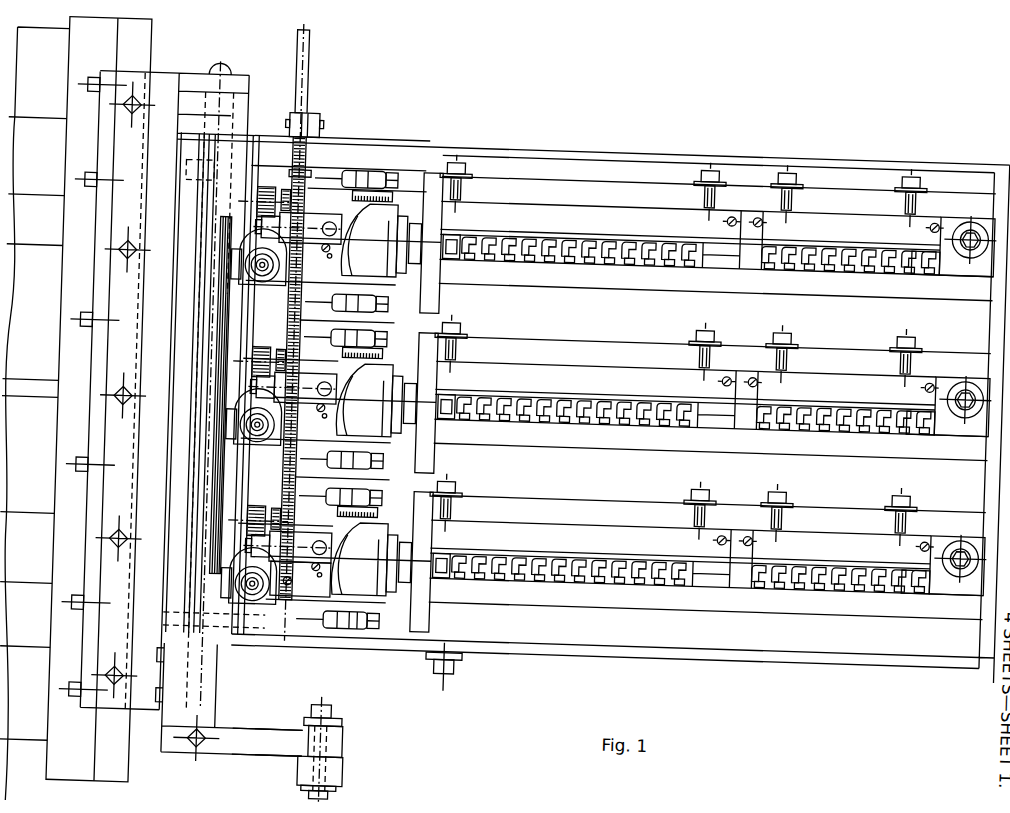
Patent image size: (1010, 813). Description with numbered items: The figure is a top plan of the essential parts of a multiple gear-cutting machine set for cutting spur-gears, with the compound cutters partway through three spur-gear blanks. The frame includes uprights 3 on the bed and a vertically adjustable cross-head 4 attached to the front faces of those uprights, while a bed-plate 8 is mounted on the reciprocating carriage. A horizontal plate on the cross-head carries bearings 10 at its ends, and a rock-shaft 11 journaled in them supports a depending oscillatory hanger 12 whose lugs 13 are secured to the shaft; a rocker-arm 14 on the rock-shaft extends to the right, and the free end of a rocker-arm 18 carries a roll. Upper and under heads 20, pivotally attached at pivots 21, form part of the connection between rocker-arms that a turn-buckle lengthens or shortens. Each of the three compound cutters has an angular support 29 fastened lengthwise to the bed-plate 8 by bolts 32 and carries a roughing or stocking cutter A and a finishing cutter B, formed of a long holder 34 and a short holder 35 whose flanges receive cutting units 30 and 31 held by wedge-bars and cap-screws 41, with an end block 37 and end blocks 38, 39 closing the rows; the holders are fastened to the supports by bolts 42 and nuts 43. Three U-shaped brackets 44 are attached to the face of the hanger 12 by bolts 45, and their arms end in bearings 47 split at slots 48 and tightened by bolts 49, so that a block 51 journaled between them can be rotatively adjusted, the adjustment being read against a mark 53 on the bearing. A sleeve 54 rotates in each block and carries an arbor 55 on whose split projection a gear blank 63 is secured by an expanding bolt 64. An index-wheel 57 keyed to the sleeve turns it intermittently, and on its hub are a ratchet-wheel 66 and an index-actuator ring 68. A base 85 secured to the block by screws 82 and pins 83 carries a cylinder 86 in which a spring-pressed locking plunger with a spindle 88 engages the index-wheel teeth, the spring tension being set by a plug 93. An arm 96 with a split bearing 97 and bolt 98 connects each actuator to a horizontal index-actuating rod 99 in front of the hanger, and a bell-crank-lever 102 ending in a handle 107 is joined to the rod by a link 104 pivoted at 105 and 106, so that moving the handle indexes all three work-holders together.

The uprights 3 is at (35, 414).
The cross-head 4 is at (99, 399).
The bed-plate 8 is at (585, 411).
The bearings 10 is at (240, 681).
The rock-shaft 11 is at (219, 354).
The oscillatory hanger 12 is at (193, 485).
The lugs 13 is at (204, 607).
The rocker-arm 14 is at (286, 745).
The rocker-arm 18 is at (367, 643).
The heads 20 is at (362, 773).
The pivots 21 is at (351, 714).
The support 29 is at (713, 368).
The cutting units 30 is at (520, 557).
The cutting units 31 is at (808, 572).
The bolts 32 is at (971, 537).
The long holder 34 is at (712, 408).
The short holder 35 is at (934, 533).
The end block 37 is at (728, 561).
The end block 38 is at (762, 563).
The end block 39 is at (938, 578).
The cap-screws 41 is at (891, 573).
The bolts 42 is at (911, 478).
The nuts 43 is at (928, 487).
The U-shaped brackets 44 is at (274, 623).
The bolts 45 is at (227, 533).
The bearings 47 is at (360, 626).
The slot 48 is at (358, 638).
The bolt 49 is at (391, 636).
The block 51 is at (355, 399).
The mark 53 is at (393, 511).
The sleeve 54 is at (407, 591).
The arbor 55 is at (420, 600).
The index-wheel 57 is at (267, 526).
The gear blank 63 is at (437, 604).
The expanding bolt 64 is at (467, 576).
The ratchet-wheel 66 is at (291, 519).
The ring 68 is at (230, 558).
The screws 82 is at (352, 547).
The pins 83 is at (350, 573).
The base 85 is at (322, 591).
The cylinder 86 is at (261, 592).
The spindle 88 is at (235, 634).
The screw cap 93 is at (261, 595).
The arm 96 is at (200, 572).
The split bearing 97 is at (317, 541).
The bolt 98 is at (322, 229).
The index-actuating rod 99 is at (309, 361).
The bell-crank-lever 102 is at (319, 121).
The link 104 is at (306, 164).
The pivot 105 is at (291, 127).
The pivot 106 is at (336, 166).
The handle 107 is at (305, 64).
The roughing cutter A is at (585, 385).
The finishing cutter B is at (835, 389).